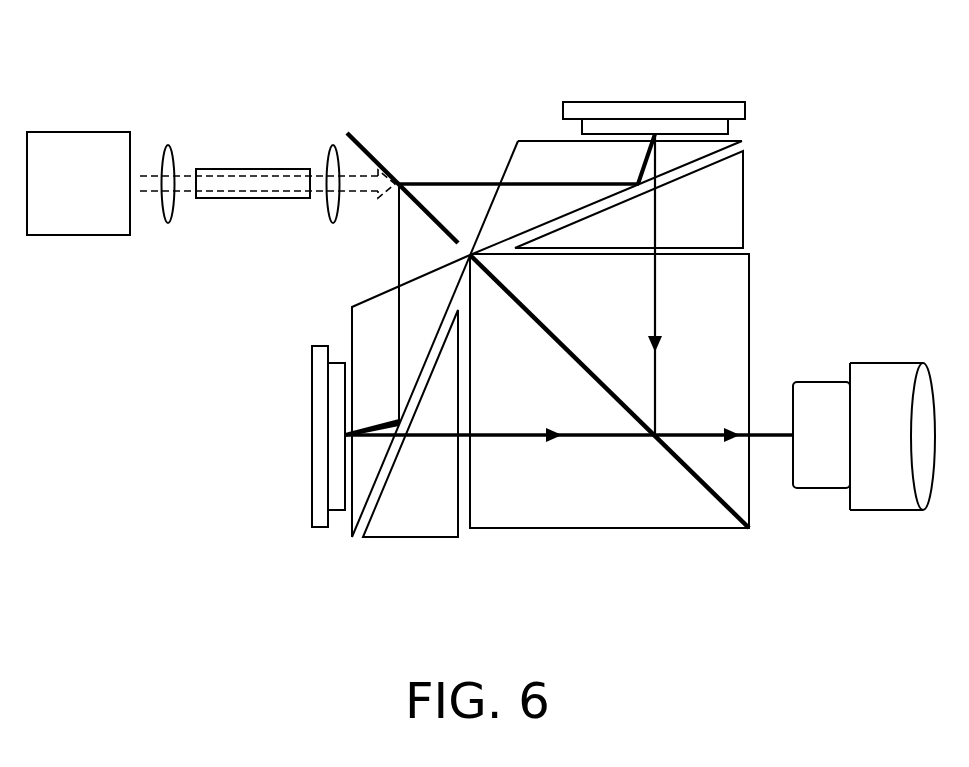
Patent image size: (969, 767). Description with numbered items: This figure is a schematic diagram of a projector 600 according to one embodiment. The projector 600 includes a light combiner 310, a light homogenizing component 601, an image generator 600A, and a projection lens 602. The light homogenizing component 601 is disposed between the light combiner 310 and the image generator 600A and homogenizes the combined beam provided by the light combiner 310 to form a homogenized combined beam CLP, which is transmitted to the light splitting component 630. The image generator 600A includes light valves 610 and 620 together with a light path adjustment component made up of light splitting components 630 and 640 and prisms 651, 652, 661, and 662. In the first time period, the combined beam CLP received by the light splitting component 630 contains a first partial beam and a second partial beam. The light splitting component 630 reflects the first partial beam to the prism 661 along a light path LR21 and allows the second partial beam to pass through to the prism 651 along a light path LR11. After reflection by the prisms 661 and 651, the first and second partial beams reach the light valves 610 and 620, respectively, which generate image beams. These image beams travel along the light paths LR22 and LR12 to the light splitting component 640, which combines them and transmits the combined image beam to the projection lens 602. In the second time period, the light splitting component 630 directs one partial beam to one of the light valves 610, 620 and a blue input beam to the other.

The light combiner 310 is at (77, 236).
The light homogenizing component 601 is at (247, 168).
The homogenized combined beam CLP is at (320, 177).
The light splitting component 630 is at (368, 150).
The light path LR11 is at (445, 180).
The light path LR21 is at (397, 238).
The prism 651 is at (530, 153).
The light valve 620 is at (702, 102).
The prism 652 is at (732, 193).
The light path LR12 is at (657, 303).
The prism 661 is at (368, 322).
The prism 662 is at (425, 517).
The light valve 610 is at (310, 442).
The light path LR22 is at (520, 438).
The light splitting component 640 is at (707, 490).
The projection lens 602 is at (888, 360).
The image generator 600A is at (780, 538).
The projector 600 is at (800, 650).